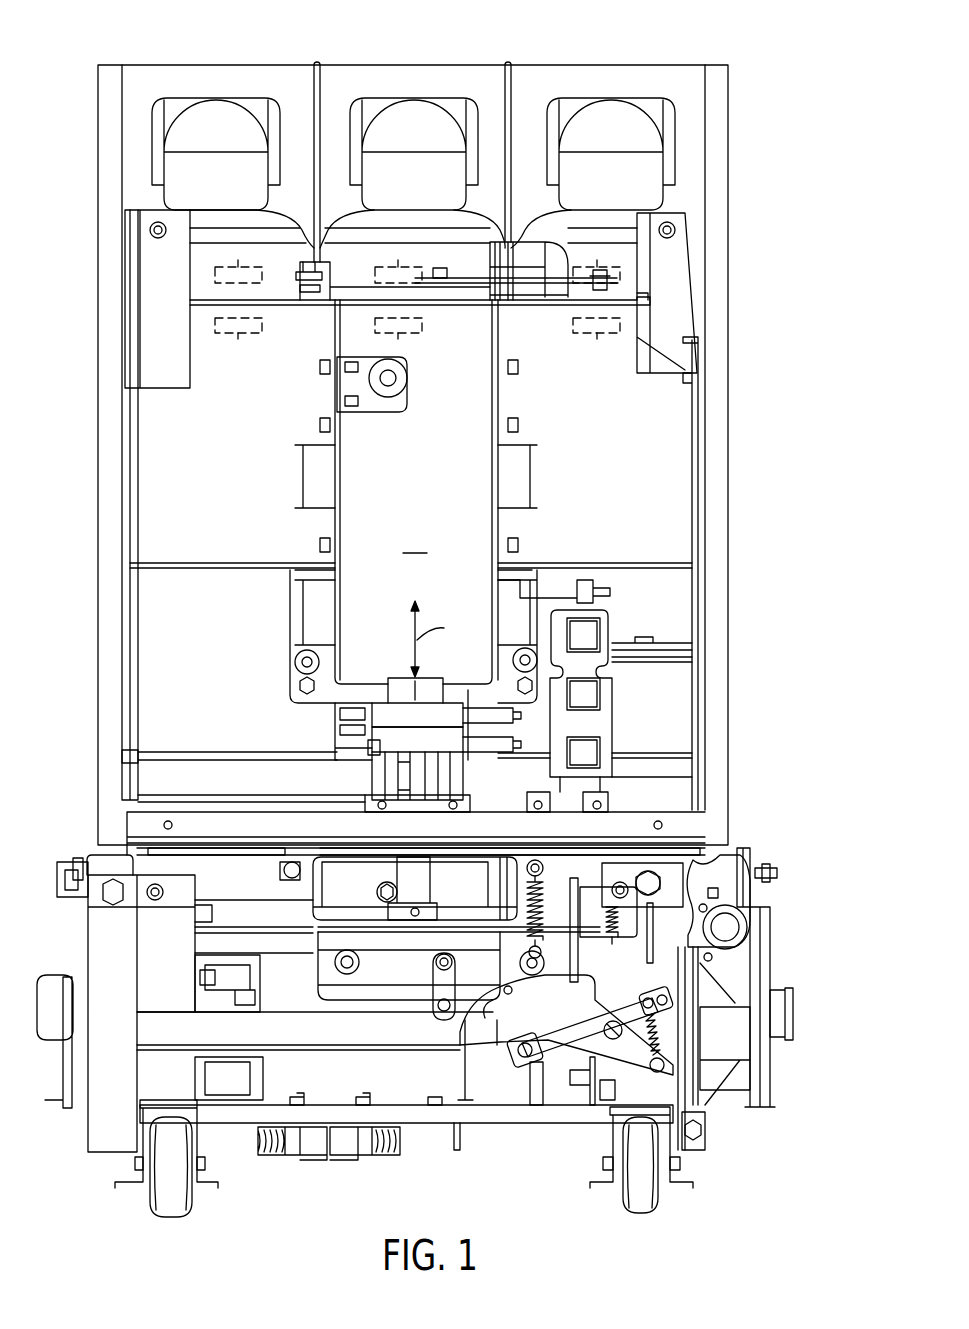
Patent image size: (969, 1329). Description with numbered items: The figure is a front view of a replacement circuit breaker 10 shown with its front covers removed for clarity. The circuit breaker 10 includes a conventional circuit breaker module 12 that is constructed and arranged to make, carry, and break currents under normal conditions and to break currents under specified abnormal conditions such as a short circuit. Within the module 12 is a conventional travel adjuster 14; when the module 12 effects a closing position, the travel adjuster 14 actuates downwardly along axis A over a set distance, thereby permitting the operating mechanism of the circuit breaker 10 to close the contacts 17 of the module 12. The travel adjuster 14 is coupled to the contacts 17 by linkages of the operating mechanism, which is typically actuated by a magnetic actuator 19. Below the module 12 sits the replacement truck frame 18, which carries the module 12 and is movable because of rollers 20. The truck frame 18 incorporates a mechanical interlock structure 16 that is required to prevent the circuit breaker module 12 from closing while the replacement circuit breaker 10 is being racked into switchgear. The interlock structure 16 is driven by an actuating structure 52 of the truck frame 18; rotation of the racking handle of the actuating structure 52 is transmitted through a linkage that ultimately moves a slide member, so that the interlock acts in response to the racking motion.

The circuit breaker 10 is at (766, 57).
The circuit breaker module 12 is at (677, 542).
The travel adjuster 14 is at (370, 762).
The mechanical interlock structure 16 is at (385, 910).
The contacts 17 is at (258, 335).
The truck frame 18 is at (535, 1115).
The magnetic actuator 19 is at (450, 501).
The rollers 20 is at (683, 1203).
The actuating structure 52 is at (482, 1013).